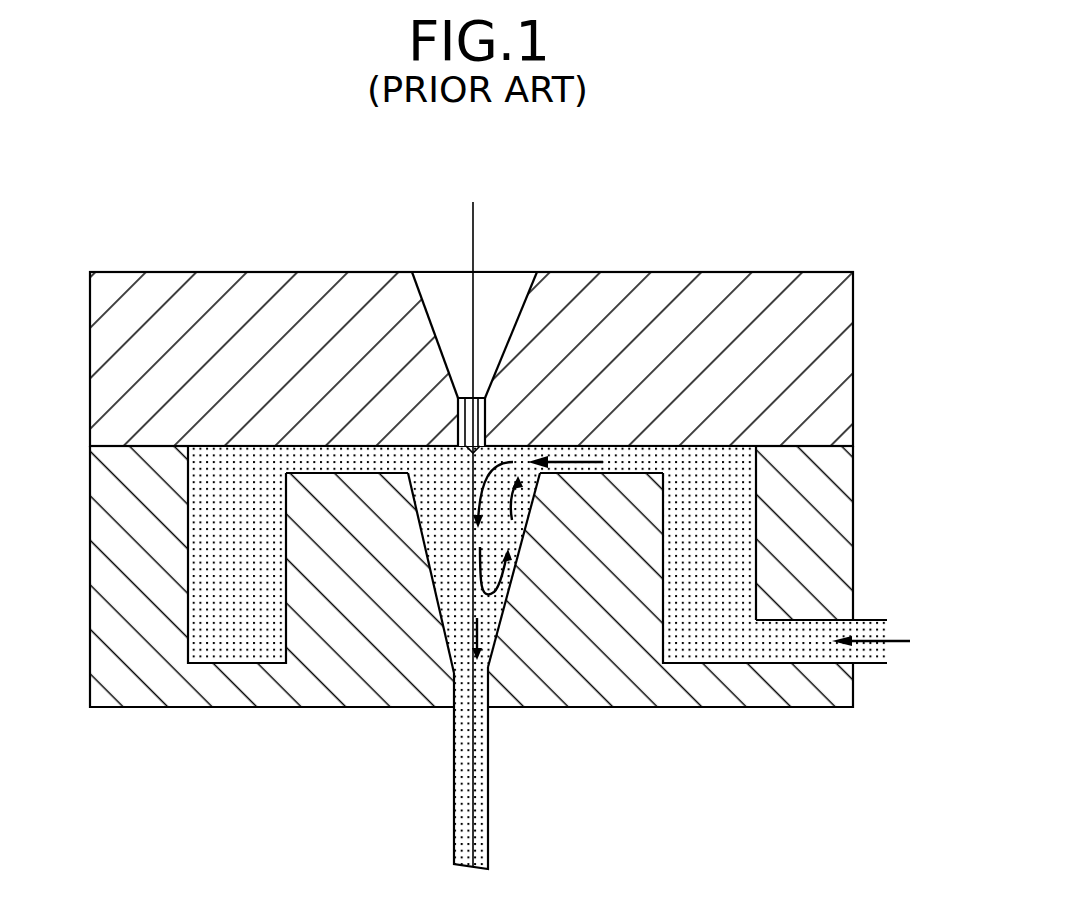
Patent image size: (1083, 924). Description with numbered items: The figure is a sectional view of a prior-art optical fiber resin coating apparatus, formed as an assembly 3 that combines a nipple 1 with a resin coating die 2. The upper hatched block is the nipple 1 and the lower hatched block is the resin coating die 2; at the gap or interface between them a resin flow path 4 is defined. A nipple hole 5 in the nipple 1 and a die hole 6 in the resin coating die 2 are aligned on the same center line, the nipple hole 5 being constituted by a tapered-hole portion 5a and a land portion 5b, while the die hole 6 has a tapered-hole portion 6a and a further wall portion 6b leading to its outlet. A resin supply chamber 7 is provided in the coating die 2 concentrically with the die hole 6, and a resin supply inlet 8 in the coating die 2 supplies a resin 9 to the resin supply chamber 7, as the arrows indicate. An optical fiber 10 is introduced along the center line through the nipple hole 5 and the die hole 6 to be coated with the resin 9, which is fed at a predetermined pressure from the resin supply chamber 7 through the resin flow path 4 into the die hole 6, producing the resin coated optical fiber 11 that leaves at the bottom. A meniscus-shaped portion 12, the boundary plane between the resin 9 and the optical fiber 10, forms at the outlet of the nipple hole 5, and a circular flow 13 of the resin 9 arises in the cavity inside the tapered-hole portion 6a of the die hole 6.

The nipple 1 is at (833, 347).
The resin coating die 2 is at (831, 521).
The assembly 3 is at (866, 421).
The resin flow path 4 is at (630, 457).
The nipple hole 5 is at (535, 314).
The tapered-hole portion 5a is at (485, 290).
The land portion 5b is at (483, 417).
The die hole 6 is at (414, 647).
The tapered-hole portion 6a is at (443, 550).
The tapered passage wall 6b is at (462, 682).
The resin supply chamber 7 is at (228, 578).
The resin supply inlet 8 is at (800, 648).
The resin 9 is at (432, 512).
The optical fiber 10 is at (513, 518).
The resin coated optical fiber 11 is at (508, 837).
The meniscus-shaped portion 12 is at (459, 397).
The circular flow 13 is at (508, 583).